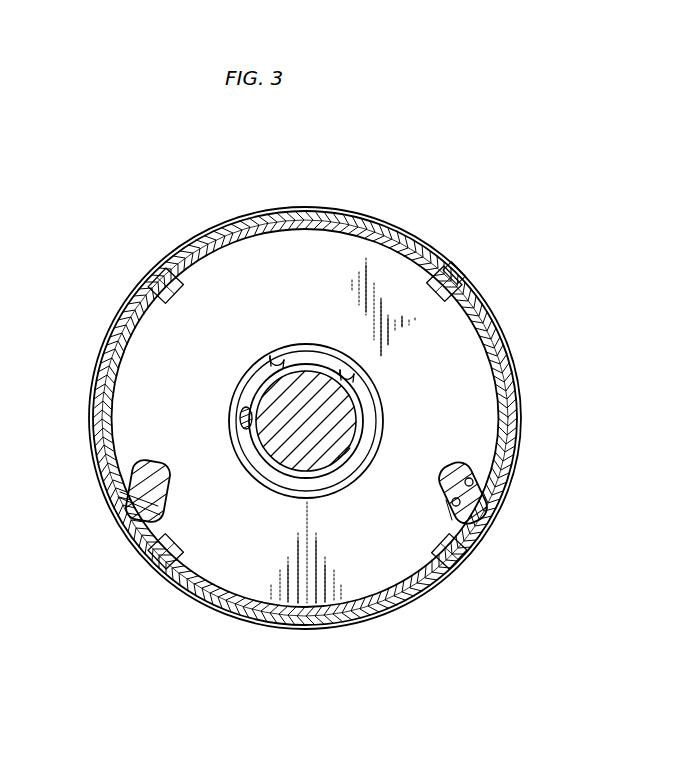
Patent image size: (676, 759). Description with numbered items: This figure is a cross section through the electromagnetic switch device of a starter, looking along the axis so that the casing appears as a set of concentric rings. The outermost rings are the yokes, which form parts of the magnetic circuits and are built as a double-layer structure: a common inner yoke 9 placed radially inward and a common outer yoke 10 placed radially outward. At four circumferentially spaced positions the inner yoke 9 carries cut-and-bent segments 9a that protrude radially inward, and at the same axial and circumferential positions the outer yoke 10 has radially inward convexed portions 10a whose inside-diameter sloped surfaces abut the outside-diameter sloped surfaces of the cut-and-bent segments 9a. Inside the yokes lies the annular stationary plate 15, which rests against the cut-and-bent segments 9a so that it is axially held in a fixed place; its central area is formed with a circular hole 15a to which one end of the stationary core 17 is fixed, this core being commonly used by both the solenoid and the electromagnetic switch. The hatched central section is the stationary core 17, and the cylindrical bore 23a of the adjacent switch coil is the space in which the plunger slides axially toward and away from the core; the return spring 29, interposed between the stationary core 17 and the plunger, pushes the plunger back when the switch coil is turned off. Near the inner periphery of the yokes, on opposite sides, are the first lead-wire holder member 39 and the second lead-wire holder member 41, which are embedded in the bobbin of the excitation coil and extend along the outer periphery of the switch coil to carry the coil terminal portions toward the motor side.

The inner yoke 9 is at (394, 233).
The cut-and-bent segments 9a is at (462, 268).
The outer yoke 10 is at (341, 212).
The radially inward convexed portions 10a is at (456, 275).
The stationary plate 15 is at (218, 277).
The circular hole 15a is at (278, 362).
The stationary core 17 is at (340, 421).
The cylindrical bore 23a is at (350, 372).
The return spring 29 is at (240, 413).
The first lead-wire holder member 39 is at (498, 508).
The second lead-wire holder member 41 is at (112, 505).